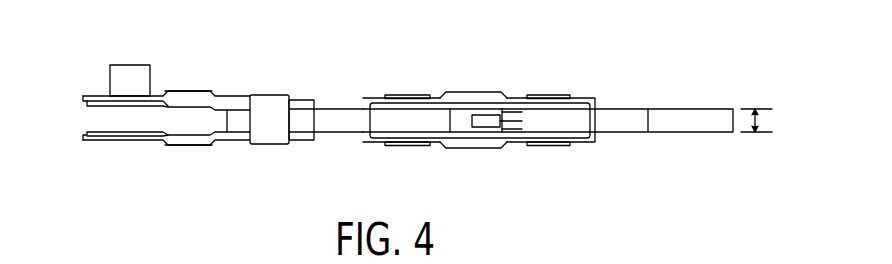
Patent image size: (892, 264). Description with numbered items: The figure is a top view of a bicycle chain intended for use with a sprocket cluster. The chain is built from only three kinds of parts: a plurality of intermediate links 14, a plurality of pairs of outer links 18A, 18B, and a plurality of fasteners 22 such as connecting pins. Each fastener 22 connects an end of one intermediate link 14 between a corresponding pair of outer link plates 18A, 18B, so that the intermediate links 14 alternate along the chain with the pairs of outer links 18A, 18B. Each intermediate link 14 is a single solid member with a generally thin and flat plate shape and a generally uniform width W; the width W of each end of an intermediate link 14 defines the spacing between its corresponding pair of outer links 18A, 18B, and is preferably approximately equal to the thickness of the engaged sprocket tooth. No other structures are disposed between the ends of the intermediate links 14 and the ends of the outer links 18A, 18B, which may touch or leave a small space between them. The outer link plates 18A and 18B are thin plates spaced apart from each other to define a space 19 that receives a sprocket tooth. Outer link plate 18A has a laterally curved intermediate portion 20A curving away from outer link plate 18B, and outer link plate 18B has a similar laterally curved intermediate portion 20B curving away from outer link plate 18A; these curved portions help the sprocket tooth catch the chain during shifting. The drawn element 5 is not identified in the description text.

The connector housing 5 is at (528, 120).
The intermediate link 14 is at (330, 109).
The outer link plate 18A is at (88, 96).
The outer link plate 18B is at (82, 138).
The space 19 is at (187, 122).
The laterally curved intermediate portion 20A is at (203, 92).
The laterally curved intermediate portion 20B is at (190, 146).
The fastener 22 is at (125, 65).
The width W is at (772, 121).